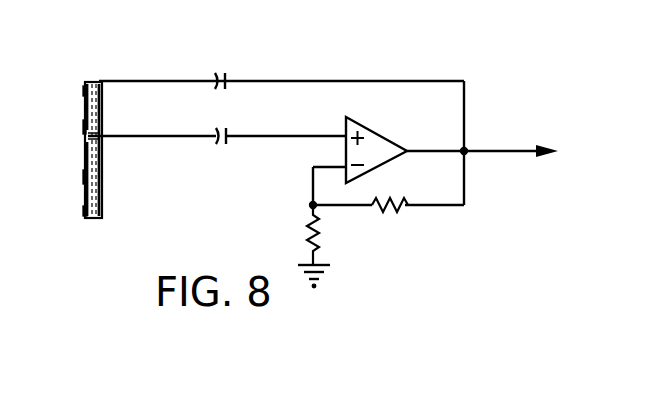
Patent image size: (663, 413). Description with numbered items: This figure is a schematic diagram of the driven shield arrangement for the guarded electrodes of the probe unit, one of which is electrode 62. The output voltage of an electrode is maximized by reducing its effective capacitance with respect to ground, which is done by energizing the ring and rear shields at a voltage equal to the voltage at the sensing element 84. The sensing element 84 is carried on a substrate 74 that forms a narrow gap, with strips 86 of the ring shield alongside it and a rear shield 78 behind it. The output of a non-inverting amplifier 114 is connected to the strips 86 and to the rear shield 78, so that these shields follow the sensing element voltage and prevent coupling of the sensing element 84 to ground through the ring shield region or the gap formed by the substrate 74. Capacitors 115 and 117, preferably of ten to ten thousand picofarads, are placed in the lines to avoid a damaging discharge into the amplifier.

The electrode 62 is at (99, 80).
The substrate 74 is at (93, 220).
The rear shield 78 is at (103, 172).
The sensing element 84 is at (85, 150).
The strips 86 is at (84, 91).
The non-inverting amplifier 114 is at (372, 126).
The capacitor 115 is at (228, 139).
The capacitor 117 is at (228, 80).